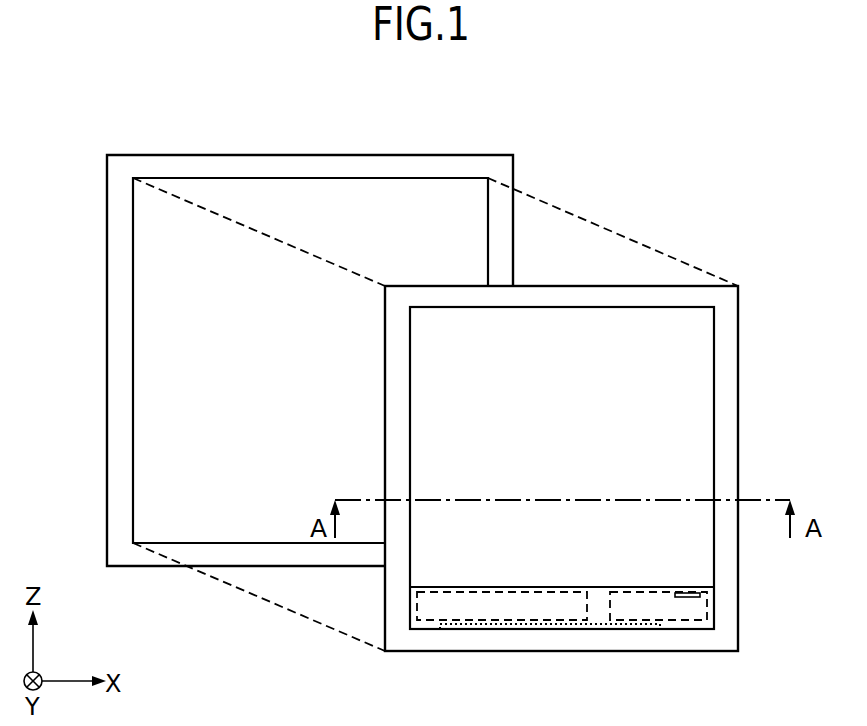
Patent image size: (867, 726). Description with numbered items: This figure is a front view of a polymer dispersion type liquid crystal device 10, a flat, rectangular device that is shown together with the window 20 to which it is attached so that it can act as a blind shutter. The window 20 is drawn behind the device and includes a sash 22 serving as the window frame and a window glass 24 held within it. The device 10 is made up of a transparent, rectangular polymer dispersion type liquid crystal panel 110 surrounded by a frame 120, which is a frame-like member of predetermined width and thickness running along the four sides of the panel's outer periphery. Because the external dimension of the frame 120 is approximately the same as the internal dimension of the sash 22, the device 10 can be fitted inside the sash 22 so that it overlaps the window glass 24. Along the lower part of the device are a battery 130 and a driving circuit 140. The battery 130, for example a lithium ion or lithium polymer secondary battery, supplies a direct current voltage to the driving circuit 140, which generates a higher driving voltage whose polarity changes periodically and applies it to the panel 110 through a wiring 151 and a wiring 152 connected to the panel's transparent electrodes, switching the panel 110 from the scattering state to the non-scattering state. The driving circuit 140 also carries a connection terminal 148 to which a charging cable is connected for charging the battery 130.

The polymer dispersion type liquid crystal device 10 is at (601, 455).
The window 20 is at (338, 333).
The sash 22 is at (387, 168).
The window glass 24 is at (298, 202).
The polymer dispersion type liquid crystal panel 110 is at (685, 347).
The frame 120 is at (727, 394).
The battery 130 is at (430, 628).
The driving circuit 140 is at (708, 603).
The connection terminal 148 is at (686, 592).
The wiring 151 is at (552, 630).
The wiring 152 is at (683, 622).